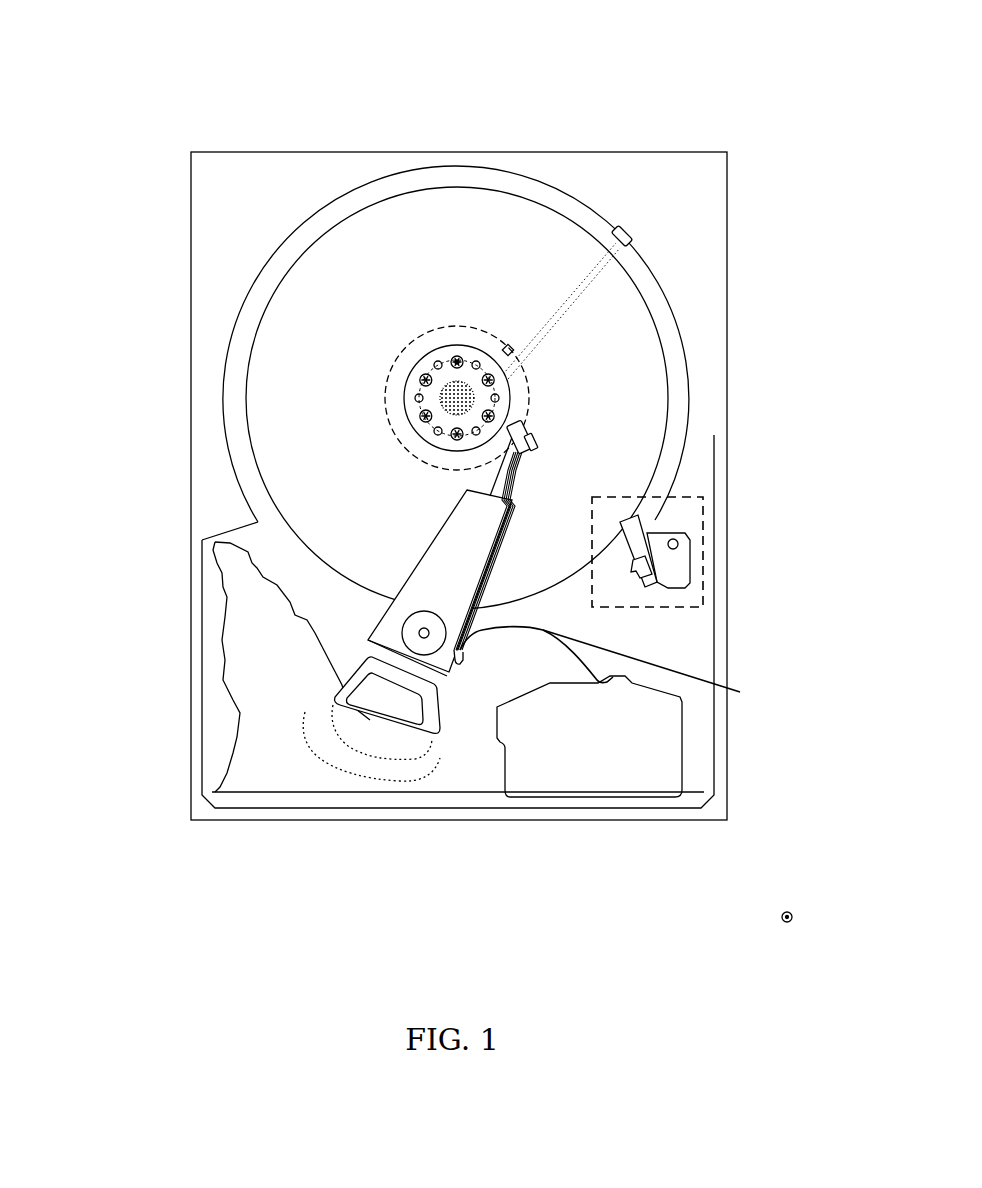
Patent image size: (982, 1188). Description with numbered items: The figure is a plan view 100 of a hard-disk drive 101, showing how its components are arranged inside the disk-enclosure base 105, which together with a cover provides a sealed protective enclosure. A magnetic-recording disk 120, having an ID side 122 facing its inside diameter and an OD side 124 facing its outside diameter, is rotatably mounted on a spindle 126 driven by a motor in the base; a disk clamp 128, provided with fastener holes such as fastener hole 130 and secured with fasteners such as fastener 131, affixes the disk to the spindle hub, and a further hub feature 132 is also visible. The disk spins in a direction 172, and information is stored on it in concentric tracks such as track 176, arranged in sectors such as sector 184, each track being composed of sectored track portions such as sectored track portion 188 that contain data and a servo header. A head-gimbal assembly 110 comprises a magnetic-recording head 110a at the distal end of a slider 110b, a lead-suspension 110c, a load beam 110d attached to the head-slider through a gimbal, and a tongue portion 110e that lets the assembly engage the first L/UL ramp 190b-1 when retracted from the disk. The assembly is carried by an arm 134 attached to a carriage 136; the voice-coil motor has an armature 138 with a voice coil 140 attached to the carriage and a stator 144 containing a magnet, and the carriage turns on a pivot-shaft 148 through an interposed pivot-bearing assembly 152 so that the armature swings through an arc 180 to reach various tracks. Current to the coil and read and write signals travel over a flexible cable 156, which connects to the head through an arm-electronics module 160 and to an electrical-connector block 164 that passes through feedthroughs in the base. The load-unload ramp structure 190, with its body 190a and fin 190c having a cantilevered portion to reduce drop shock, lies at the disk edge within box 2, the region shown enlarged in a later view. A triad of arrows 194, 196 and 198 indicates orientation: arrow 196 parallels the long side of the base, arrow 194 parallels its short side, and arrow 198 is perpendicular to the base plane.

The plan view 100 is at (106, 68).
The hard-disk drive 101 is at (699, 142).
The disk-enclosure base 105 is at (200, 813).
The head-gimbal assembly 110 is at (681, 369).
The magnetic-recording head 110a is at (530, 428).
The slider 110b is at (535, 441).
The lead-suspension 110c is at (517, 460).
The load beam 110d is at (497, 483).
The tongue portion 110e is at (521, 421).
The magnetic-recording disk 120 is at (325, 497).
The ID side 122 is at (415, 406).
The OD side 124 is at (250, 442).
The spindle 126 is at (455, 396).
The disk clamp 128 is at (410, 375).
The fastener hole 130 is at (453, 358).
The fastener 131 is at (459, 356).
The hole 132 is at (497, 397).
The arm 134 is at (468, 537).
The carriage 136 is at (422, 602).
The armature 138 is at (443, 702).
The voice coil 140 is at (428, 722).
The stator 144 is at (245, 717).
The pivot-shaft 148 is at (419, 633).
The pivot-bearing assembly 152 is at (452, 632).
The flexible cable 156 is at (672, 671).
The arm-electronics module 160 is at (462, 660).
The electrical-connector block 164 is at (660, 738).
The direction 172 is at (518, 590).
The track 176 is at (395, 432).
The arc 180 is at (392, 787).
The sector 184 is at (628, 238).
The sectored track portion 188 is at (509, 345).
The L/UL ramp structure 190 is at (745, 543).
The latch body 190a is at (676, 570).
The first L/UL ramp 190b-1 is at (633, 535).
The fin 190c is at (645, 567).
The arrow 194 is at (752, 922).
The arrow 196 is at (787, 922).
The arrow 198 is at (798, 914).
The box 2 is at (703, 607).